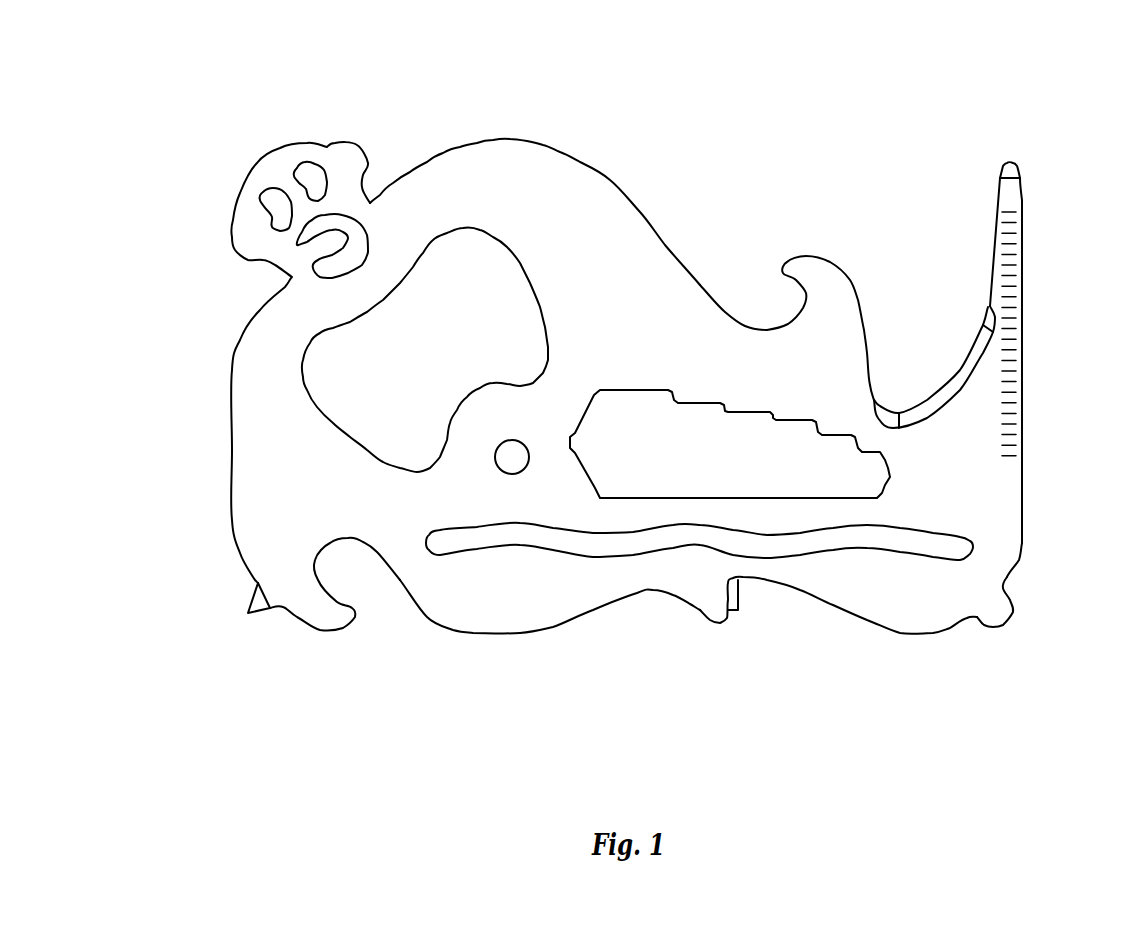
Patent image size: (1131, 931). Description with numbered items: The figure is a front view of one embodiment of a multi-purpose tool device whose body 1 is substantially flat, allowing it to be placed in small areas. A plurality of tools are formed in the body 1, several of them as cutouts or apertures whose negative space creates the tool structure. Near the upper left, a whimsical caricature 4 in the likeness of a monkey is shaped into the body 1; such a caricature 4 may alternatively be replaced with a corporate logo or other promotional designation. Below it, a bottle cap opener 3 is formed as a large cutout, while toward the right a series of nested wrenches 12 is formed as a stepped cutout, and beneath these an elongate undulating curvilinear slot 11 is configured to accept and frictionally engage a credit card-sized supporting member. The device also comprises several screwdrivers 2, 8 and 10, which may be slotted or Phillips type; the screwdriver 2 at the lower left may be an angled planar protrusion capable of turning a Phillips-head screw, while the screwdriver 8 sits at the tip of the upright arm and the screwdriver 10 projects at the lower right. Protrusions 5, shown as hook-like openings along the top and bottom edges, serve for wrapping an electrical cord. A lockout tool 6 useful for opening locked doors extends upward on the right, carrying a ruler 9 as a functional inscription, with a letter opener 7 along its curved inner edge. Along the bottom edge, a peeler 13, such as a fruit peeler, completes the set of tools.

The body 1 is at (370, 503).
The screwdriver 2 is at (238, 623).
The bottle cap opener 3 is at (323, 378).
The whimsical caricature 4 is at (280, 167).
The protrusion 5 is at (775, 283).
The lockout tool 6 is at (987, 230).
The letter opener 7 is at (967, 360).
The screwdriver 8 is at (1018, 158).
The ruler 9 is at (1028, 268).
The screwdriver 10 is at (1017, 625).
The elongate undulating curvilinear slot 11 is at (870, 537).
The nested wrenches 12 is at (692, 463).
The peeler 13 is at (668, 608).